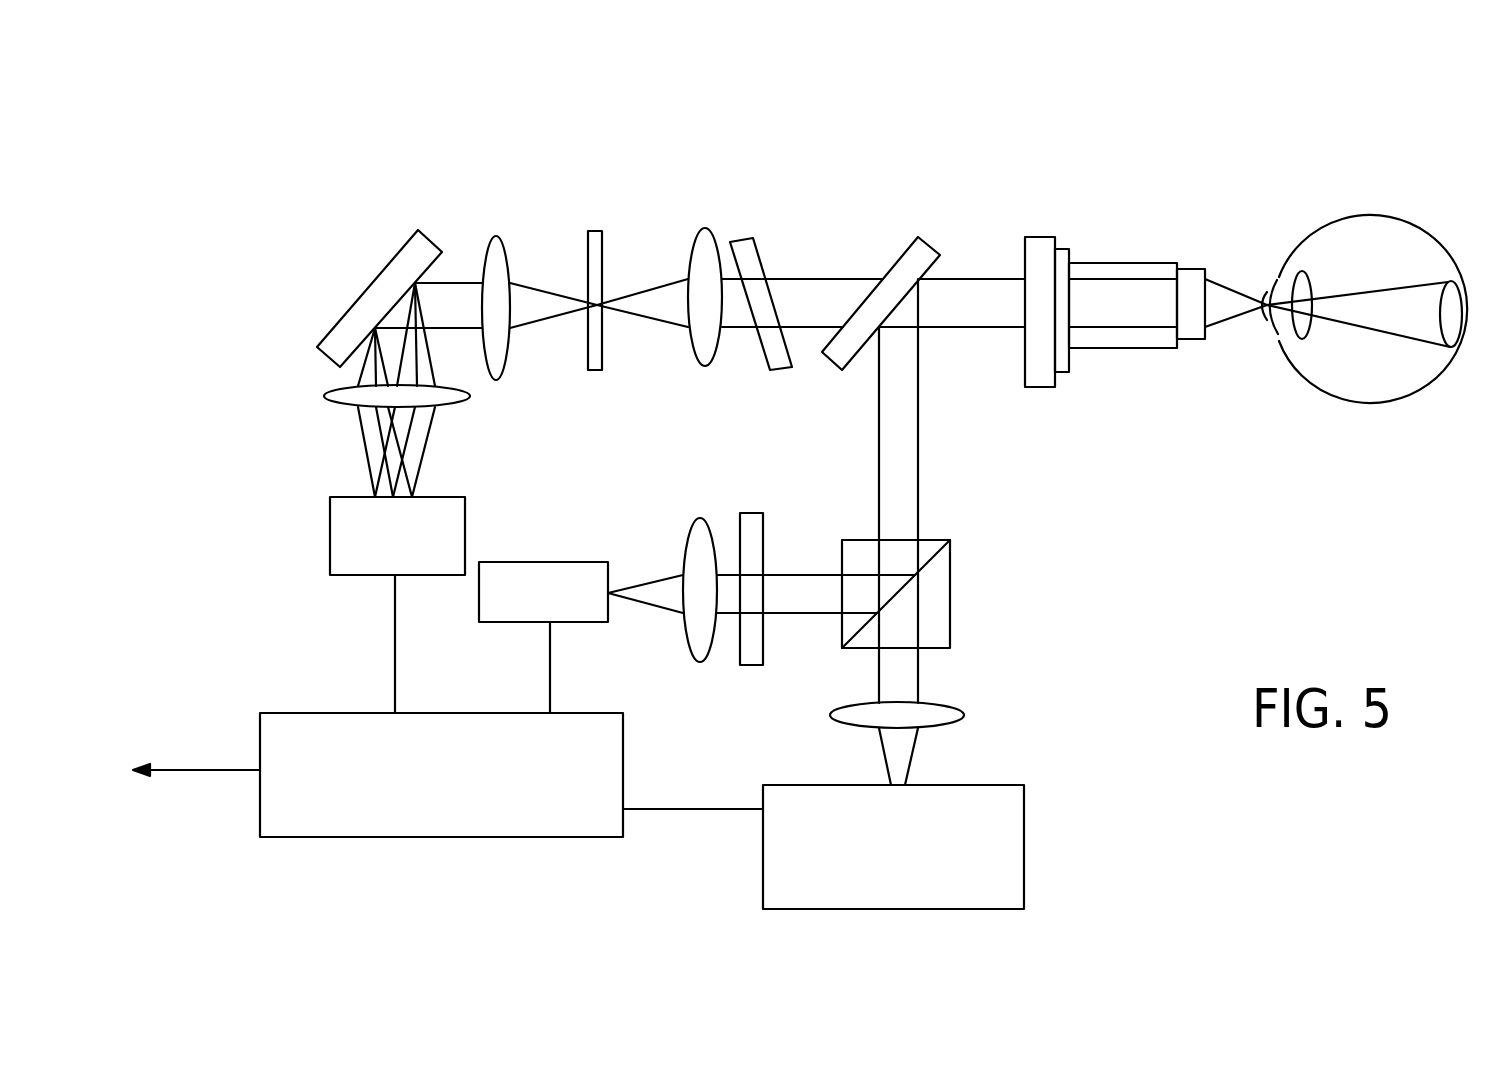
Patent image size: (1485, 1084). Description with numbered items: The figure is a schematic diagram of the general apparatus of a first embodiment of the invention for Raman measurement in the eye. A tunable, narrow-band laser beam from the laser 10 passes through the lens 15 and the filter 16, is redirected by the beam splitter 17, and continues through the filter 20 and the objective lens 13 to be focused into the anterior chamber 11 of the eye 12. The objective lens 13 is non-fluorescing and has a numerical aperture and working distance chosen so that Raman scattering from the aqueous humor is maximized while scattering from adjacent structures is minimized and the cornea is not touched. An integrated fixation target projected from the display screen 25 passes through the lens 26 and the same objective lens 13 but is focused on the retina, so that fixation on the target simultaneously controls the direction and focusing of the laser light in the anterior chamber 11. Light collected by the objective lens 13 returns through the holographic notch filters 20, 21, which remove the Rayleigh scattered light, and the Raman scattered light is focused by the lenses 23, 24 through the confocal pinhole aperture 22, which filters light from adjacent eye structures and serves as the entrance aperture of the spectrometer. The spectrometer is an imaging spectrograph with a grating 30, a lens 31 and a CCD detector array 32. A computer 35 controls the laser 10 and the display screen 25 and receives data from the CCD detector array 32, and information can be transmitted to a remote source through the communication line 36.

The laser 10 is at (527, 562).
The anterior chamber 11 is at (1270, 335).
The eye 12 is at (1377, 227).
The objective lens 13 is at (1135, 262).
The lens 15 is at (688, 530).
The filter 16 is at (762, 512).
The beam splitter 17 is at (950, 540).
The holographic notch filter 20 is at (928, 232).
The holographic notch filter 21 is at (760, 260).
The confocal pinhole aperture 22 is at (587, 245).
The lens 23 is at (705, 227).
The lens 24 is at (490, 243).
The display screen 25 is at (1025, 858).
The lens 26 is at (948, 703).
The grating 30 is at (373, 283).
The lens 31 is at (323, 390).
The CCD detector array 32 is at (330, 520).
The computer 35 is at (547, 837).
The communication line 36 is at (165, 768).